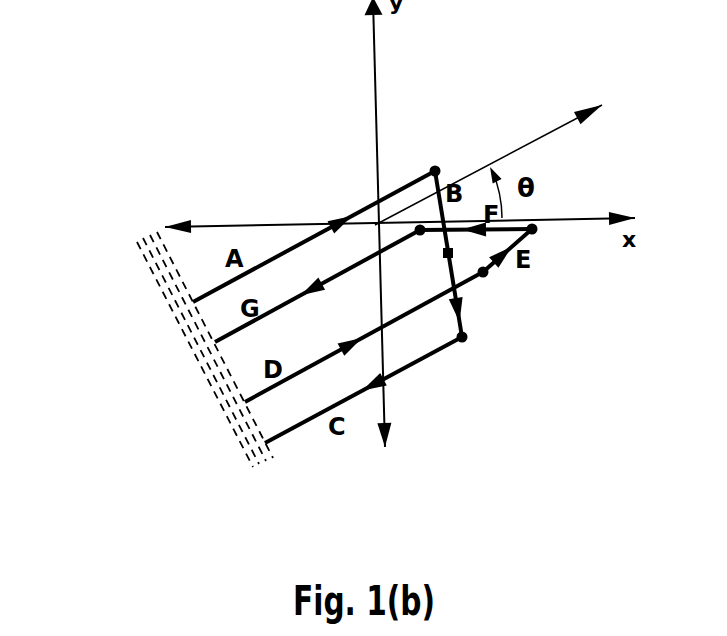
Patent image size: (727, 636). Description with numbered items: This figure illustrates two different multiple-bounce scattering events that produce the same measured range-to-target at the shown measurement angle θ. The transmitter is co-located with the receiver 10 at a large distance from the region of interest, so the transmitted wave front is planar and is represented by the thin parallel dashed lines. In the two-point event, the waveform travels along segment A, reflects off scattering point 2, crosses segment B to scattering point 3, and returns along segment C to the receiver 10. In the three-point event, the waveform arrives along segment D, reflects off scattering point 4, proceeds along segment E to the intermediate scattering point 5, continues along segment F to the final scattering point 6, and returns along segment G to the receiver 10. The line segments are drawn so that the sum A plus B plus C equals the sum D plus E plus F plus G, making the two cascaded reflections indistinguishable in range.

The scattering point 2 is at (435, 160).
The scattering point 3 is at (473, 349).
The scattering point 4 is at (489, 287).
The scattering point 5 is at (543, 237).
The scattering point 6 is at (415, 247).
The co-located transmitter and receiver 10 is at (192, 348).